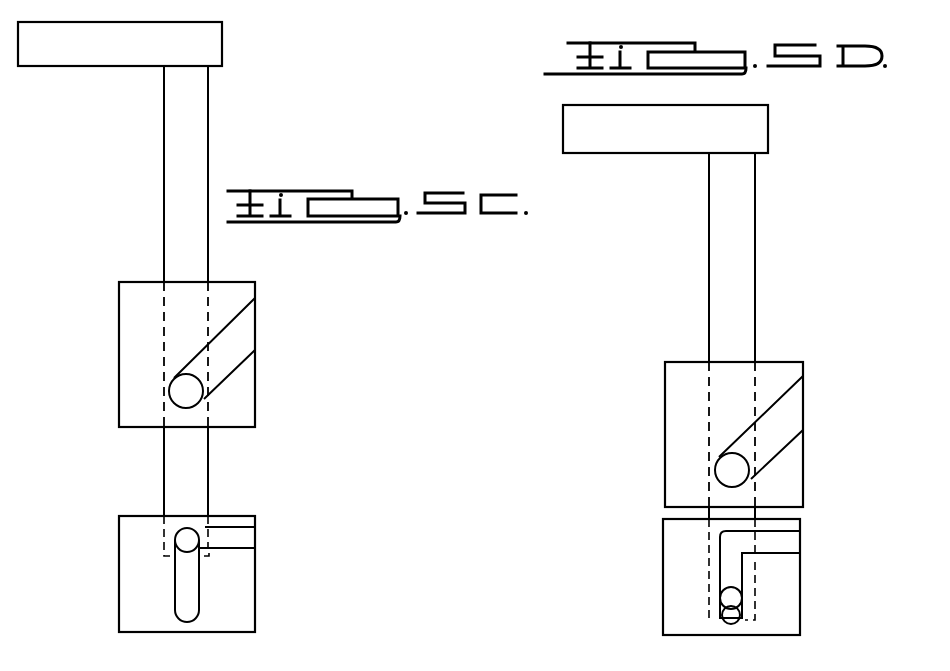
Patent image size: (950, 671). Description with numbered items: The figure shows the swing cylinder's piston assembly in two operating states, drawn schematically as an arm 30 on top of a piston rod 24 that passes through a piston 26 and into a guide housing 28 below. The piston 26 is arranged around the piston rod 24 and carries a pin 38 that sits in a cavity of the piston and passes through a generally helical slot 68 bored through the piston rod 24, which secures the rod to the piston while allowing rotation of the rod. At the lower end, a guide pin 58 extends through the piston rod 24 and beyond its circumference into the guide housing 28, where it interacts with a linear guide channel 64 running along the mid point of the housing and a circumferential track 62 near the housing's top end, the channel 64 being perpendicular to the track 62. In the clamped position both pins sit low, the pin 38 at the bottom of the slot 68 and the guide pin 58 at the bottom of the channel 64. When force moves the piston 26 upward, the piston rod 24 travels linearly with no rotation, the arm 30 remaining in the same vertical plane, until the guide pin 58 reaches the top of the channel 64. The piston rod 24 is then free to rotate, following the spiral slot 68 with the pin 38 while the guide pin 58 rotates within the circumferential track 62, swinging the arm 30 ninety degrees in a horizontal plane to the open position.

In FIG. 5C, the arm 30 is at (208, 39).
In FIG. 5D, the arm 30 is at (569, 120).
In FIG. 5C, the piston rod 24 is at (170, 190).
In FIG. 5D, the piston rod 24 is at (724, 262).
In FIG. 5C, the piston 26 is at (125, 360).
In FIG. 5D, the piston 26 is at (673, 370).
In FIG. 5C, the guide housing 28 is at (130, 547).
In FIG. 5D, the guide housing 28 is at (672, 530).
In FIG. 5D, the pin 38 is at (726, 470).
In FIG. 5D, the helical slot 68 is at (790, 410).
In FIG. 5D, the circumferential track 62 is at (786, 540).
In FIG. 5D, the guide pin 58 is at (726, 598).
In FIG. 5D, the linear guide channel 64 is at (724, 616).